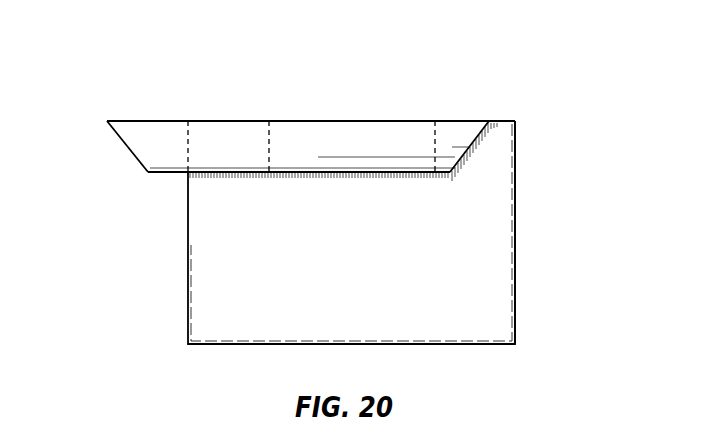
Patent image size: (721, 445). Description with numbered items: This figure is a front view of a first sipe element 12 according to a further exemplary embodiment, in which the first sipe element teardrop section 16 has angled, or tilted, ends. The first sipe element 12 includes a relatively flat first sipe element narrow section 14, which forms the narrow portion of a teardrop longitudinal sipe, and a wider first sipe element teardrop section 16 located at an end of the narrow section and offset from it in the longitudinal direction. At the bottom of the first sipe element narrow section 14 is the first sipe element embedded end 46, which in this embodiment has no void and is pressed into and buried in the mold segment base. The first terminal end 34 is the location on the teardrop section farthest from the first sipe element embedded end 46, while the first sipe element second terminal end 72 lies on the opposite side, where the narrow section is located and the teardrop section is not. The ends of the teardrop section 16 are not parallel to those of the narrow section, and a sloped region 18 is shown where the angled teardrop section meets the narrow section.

The first sipe element 12 is at (157, 70).
The first sipe element narrow section 14 is at (500, 270).
The first sipe element teardrop section 16 is at (330, 128).
The sloped wall 18 is at (134, 155).
The first terminal end 34 is at (104, 122).
The first sipe element embedded end 46 is at (225, 328).
The first sipe element second terminal end 72 is at (522, 178).